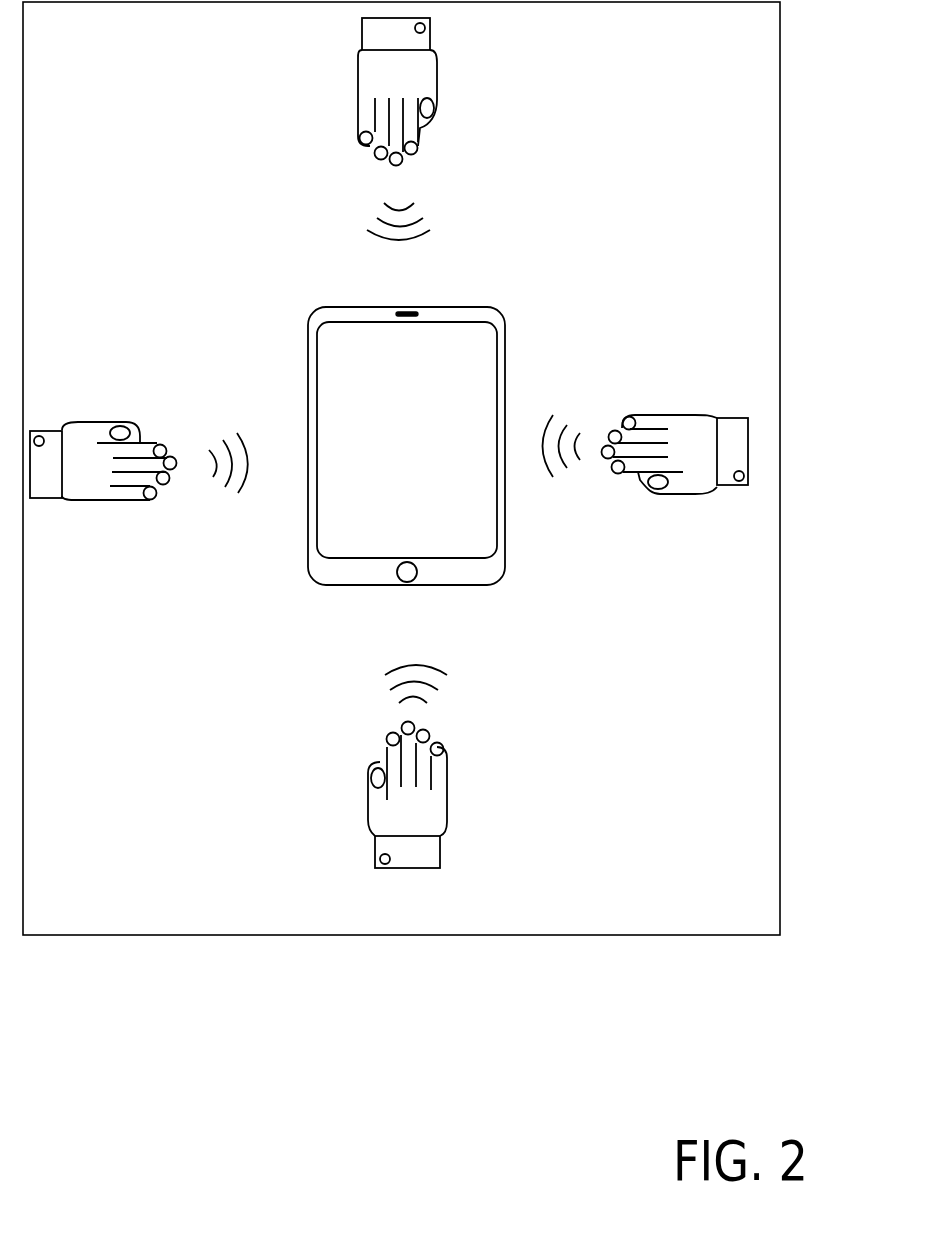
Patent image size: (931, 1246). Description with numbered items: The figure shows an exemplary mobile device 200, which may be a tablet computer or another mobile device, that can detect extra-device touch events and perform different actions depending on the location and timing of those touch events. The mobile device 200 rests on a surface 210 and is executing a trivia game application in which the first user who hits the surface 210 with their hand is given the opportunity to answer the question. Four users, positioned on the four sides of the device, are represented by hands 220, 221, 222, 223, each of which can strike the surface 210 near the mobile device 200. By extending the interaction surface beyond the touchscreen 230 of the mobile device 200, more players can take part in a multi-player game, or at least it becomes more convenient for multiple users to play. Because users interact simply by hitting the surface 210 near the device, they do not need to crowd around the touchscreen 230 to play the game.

The mobile device 200 is at (420, 486).
The surface 210 is at (89, 64).
The hand 220 is at (410, 86).
The hand 221 is at (702, 452).
The hand 222 is at (423, 820).
The hand 223 is at (105, 470).
The touchscreen 230 is at (367, 354).